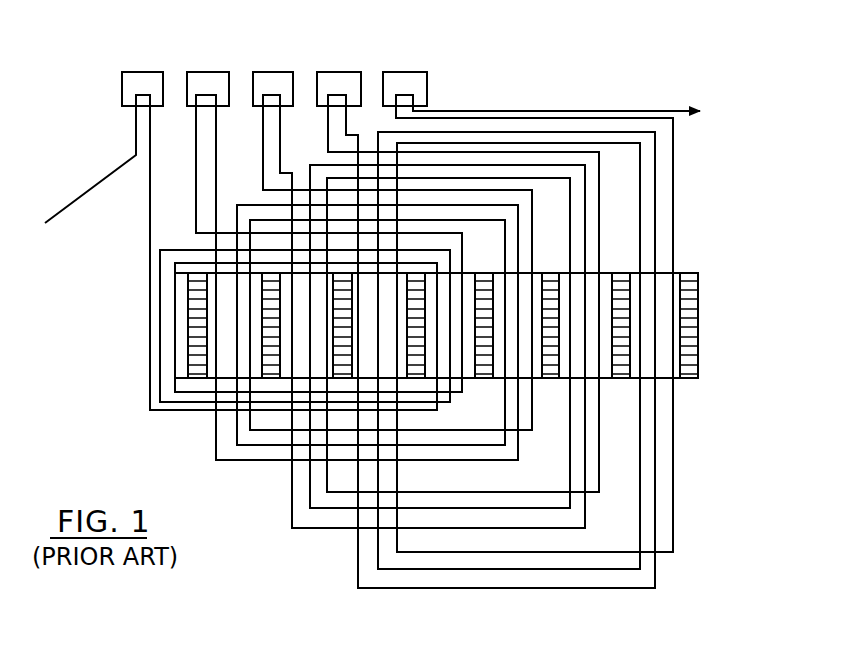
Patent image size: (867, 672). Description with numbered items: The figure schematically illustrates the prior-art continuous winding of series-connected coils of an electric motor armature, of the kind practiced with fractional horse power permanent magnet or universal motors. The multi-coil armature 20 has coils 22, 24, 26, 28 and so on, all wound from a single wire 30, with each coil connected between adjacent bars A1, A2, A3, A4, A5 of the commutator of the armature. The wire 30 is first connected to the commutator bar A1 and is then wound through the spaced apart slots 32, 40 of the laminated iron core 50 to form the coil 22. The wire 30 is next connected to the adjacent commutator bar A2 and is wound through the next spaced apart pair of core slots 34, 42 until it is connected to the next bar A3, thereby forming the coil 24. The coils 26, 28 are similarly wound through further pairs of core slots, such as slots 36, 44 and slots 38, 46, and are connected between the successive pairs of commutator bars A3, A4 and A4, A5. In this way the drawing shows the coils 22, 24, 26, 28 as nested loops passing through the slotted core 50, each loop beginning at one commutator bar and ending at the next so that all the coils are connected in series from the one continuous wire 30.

The multi-coil armature 20 is at (100, 370).
The coil 22 is at (140, 380).
The coil 24 is at (219, 470).
The coil 26 is at (310, 540).
The coil 28 is at (433, 600).
The wire 30 is at (84, 192).
The slot 32 is at (188, 303).
The slot 34 is at (212, 373).
The slot 36 is at (285, 367).
The slot 38 is at (407, 348).
The slot 40 is at (476, 340).
The slot 42 is at (543, 348).
The slot 44 is at (612, 350).
The slot 46 is at (682, 352).
The laminated iron core 50 is at (700, 308).
The commutator bar A1 is at (145, 72).
The commutator bar A2 is at (207, 72).
The commutator bar A3 is at (273, 72).
The commutator bar A4 is at (337, 72).
The commutator bar A5 is at (405, 72).